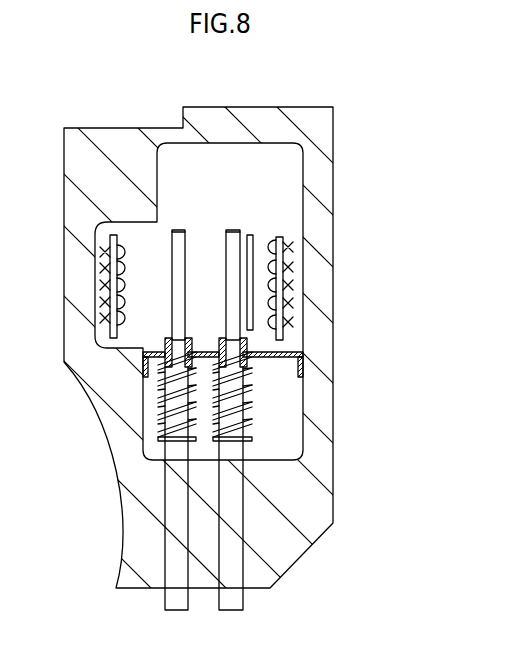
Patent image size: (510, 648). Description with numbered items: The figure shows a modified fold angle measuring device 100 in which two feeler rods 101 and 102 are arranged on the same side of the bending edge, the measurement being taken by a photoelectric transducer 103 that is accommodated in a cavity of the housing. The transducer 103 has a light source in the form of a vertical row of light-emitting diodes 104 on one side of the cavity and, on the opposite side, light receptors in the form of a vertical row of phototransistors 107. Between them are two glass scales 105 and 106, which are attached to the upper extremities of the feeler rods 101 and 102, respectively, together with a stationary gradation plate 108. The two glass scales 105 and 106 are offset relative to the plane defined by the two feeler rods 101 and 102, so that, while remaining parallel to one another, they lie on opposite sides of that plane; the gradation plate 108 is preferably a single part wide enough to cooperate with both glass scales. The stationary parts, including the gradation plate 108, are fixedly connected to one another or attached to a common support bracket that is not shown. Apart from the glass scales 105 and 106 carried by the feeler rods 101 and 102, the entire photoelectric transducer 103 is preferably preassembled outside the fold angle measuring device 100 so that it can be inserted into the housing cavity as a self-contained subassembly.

The fold angle measuring device 100 is at (118, 118).
The feeler rod 101 is at (175, 603).
The feeler rod 102 is at (238, 603).
The photoelectric transducer 103 is at (185, 198).
The light-emitting diodes 104 is at (107, 284).
The glass scale 105 is at (175, 245).
The glass scale 106 is at (228, 240).
The phototransistors 107 is at (268, 245).
The gradation plate 108 is at (251, 236).